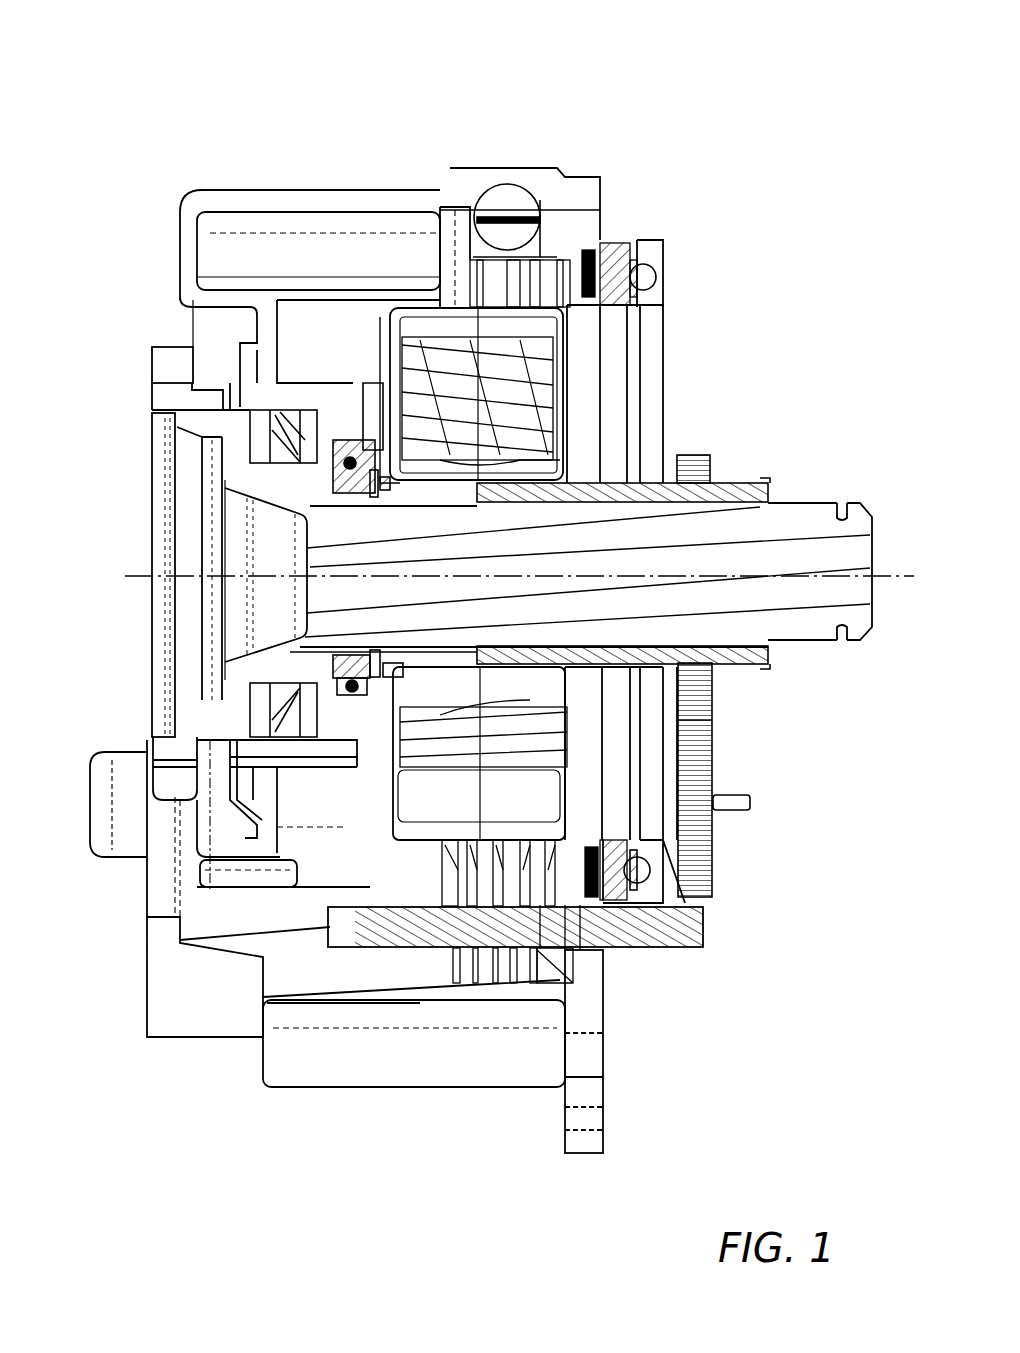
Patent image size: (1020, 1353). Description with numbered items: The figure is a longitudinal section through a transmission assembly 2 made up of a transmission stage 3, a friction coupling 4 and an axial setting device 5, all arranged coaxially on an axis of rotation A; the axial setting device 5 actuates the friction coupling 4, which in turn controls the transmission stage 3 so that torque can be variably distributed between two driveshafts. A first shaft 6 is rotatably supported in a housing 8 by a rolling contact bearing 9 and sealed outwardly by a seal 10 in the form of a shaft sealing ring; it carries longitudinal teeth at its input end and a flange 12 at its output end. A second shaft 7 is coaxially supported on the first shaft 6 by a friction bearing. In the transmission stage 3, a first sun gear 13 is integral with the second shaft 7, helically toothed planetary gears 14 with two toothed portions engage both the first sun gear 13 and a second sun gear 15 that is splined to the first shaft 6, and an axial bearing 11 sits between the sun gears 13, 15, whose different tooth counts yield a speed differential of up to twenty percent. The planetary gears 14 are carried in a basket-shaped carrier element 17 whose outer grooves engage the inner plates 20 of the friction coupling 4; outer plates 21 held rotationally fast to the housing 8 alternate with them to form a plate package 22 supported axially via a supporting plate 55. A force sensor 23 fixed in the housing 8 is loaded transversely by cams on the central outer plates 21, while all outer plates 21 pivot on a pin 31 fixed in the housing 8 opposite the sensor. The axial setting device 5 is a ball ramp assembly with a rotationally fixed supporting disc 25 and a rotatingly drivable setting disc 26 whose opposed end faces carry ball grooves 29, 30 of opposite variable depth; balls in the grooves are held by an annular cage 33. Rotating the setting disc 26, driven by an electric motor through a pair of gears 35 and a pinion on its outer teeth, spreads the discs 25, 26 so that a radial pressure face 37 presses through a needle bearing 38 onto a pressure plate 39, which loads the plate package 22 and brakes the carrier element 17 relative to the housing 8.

The transmission assembly 2 is at (172, 128).
The transmission stage 3 is at (420, 320).
The friction coupling 4 is at (560, 260).
The axial setting device 5 is at (650, 252).
The first shaft 6 is at (800, 525).
The second shaft 7 is at (635, 500).
The housing 8 is at (262, 200).
The rolling contact bearing 9 is at (222, 480).
The seal 10 is at (255, 430).
The axial bearing 11 is at (313, 627).
The flange 12 is at (165, 352).
The first sun gear 13 is at (520, 460).
The planetary gears 14 is at (513, 407).
The second sun gear 15 is at (472, 486).
The carrier element 17 is at (605, 745).
The inner plates 20 is at (540, 260).
The outer plates 21 is at (527, 232).
The plate package 22 is at (420, 920).
The force sensor 23 is at (493, 260).
The supporting disc 25 is at (655, 252).
The setting disc 26 is at (612, 245).
The ball grooves 29 is at (645, 900).
The ball grooves 30 is at (632, 905).
The pin 31 is at (695, 930).
The cage 33 is at (640, 265).
The pair of gears 35 is at (735, 803).
The radial pressure face 37 is at (580, 910).
The needle bearing 38 is at (545, 940).
The pressure plate 39 is at (590, 250).
The supporting plate 55 is at (455, 215).
The axis of rotation A is at (890, 576).